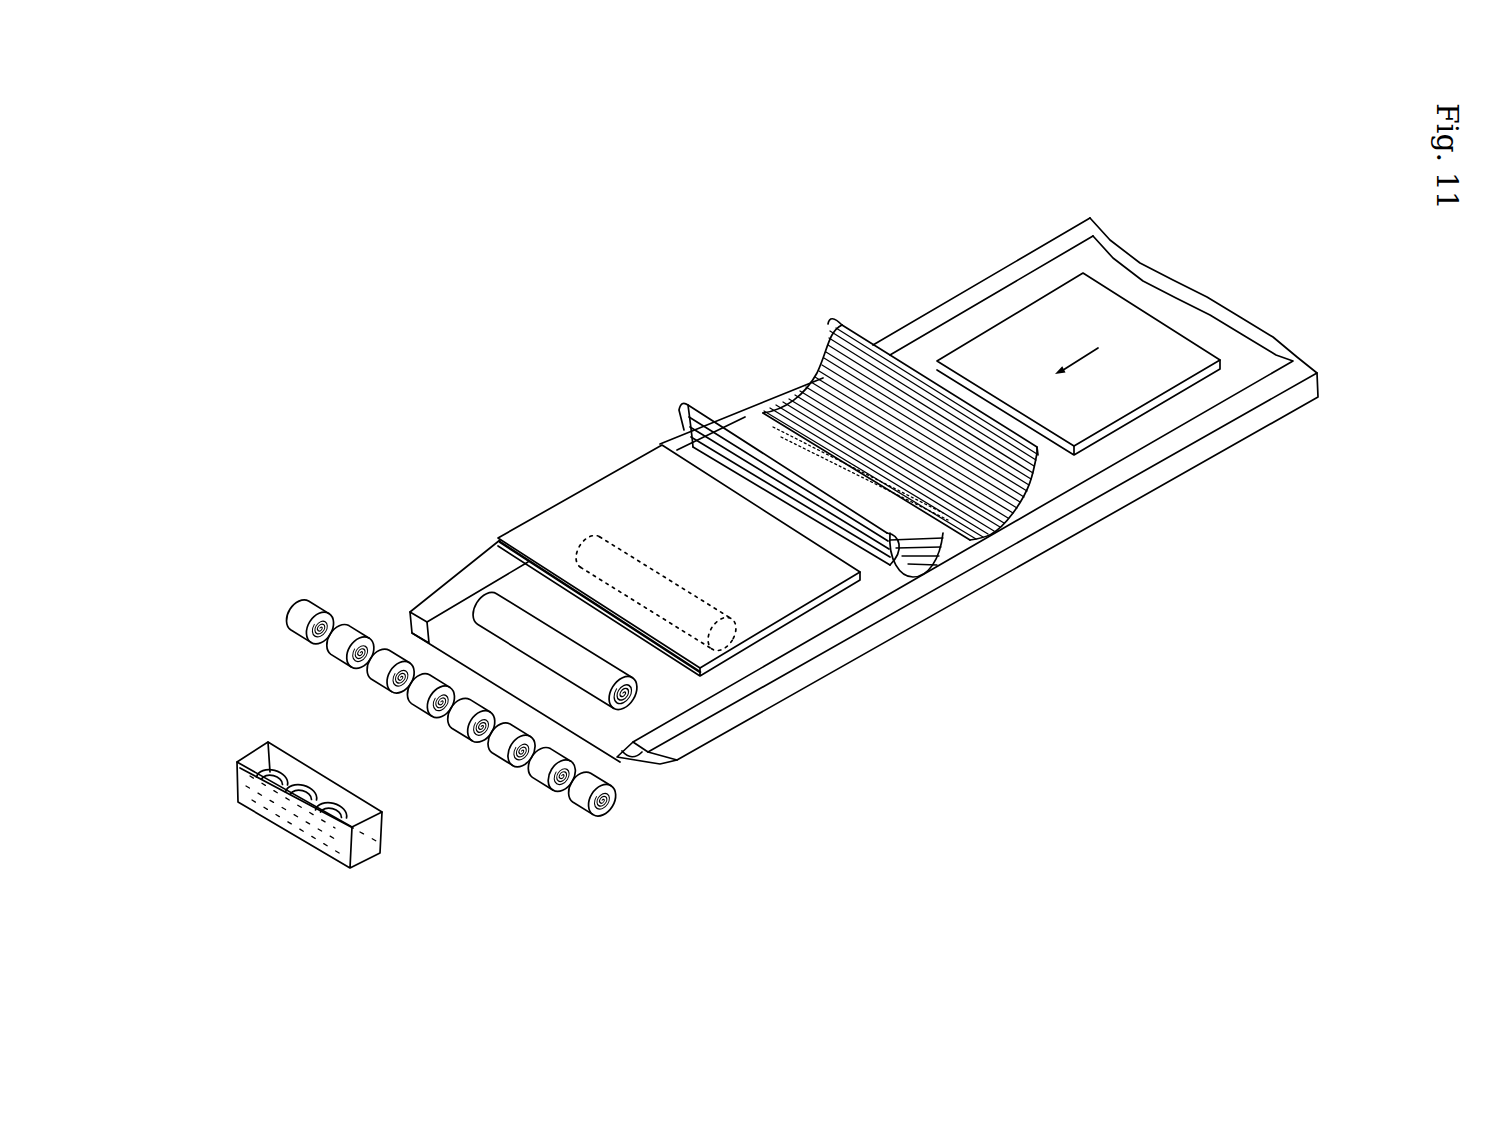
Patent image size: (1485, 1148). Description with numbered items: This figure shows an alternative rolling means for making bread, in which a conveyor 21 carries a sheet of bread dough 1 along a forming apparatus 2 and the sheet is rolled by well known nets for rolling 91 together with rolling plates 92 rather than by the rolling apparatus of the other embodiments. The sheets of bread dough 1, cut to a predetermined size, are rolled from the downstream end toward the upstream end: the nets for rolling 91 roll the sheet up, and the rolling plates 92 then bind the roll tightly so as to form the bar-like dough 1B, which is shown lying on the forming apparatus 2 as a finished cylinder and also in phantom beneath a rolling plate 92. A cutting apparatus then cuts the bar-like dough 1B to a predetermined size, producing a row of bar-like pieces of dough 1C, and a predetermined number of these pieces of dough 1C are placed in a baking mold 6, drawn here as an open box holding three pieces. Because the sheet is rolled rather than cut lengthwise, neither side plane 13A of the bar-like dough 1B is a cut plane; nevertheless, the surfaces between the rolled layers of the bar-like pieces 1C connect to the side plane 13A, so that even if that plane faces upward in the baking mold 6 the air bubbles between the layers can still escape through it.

The sheet of bread dough 1 is at (1107, 318).
The forming apparatus 2 is at (998, 245).
The conveyor 21 is at (962, 290).
The net for rolling 91 is at (828, 351).
The rolling plate 92 is at (627, 465).
The bar-like dough 1B is at (513, 595).
The bar-like pieces of dough 1C is at (377, 604).
The side plane of the bar-like dough 13A is at (293, 613).
The baking mold 6 is at (292, 832).